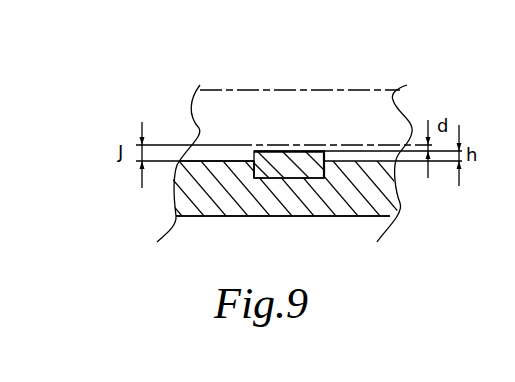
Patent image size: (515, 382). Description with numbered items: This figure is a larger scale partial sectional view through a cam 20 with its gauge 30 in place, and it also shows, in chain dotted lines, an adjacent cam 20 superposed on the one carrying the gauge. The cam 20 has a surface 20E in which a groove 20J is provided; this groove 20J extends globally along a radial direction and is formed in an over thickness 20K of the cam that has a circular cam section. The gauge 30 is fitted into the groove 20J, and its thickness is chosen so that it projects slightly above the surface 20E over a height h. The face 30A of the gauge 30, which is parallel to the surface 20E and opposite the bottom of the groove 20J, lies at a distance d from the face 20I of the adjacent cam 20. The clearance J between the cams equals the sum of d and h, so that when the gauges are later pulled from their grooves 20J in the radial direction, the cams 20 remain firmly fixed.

The cam 20 is at (373, 103).
The surface 20E is at (215, 152).
The groove 20J is at (253, 150).
The face of the adjacent cam 20I is at (202, 153).
The over thickness 20K is at (340, 168).
The gauge 30 is at (291, 150).
The face of the gauge 30A is at (272, 142).